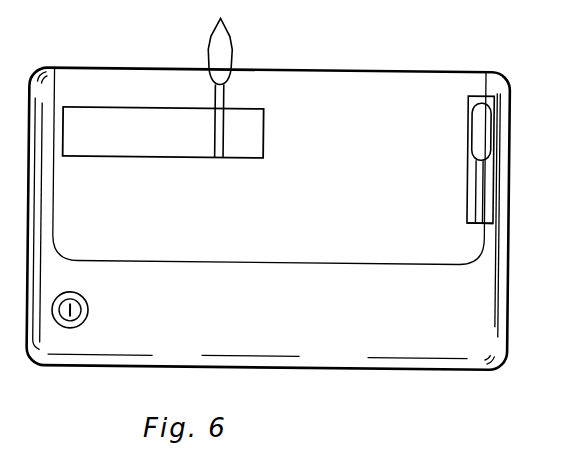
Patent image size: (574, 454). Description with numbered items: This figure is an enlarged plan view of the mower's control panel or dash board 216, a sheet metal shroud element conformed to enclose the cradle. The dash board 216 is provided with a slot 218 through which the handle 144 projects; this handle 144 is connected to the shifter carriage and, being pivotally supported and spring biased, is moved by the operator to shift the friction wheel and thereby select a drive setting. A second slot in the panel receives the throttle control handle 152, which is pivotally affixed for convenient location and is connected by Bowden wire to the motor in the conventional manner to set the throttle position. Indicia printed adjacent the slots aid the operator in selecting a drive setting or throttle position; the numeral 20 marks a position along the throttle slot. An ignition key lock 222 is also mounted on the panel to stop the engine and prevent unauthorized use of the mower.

The control panel or dash board 216 is at (346, 347).
The slot 218 is at (170, 148).
The handle 144 is at (221, 138).
The throttle control handle 152 is at (483, 183).
The throttle control slot 20 is at (472, 193).
The ignition key lock 222 is at (79, 327).